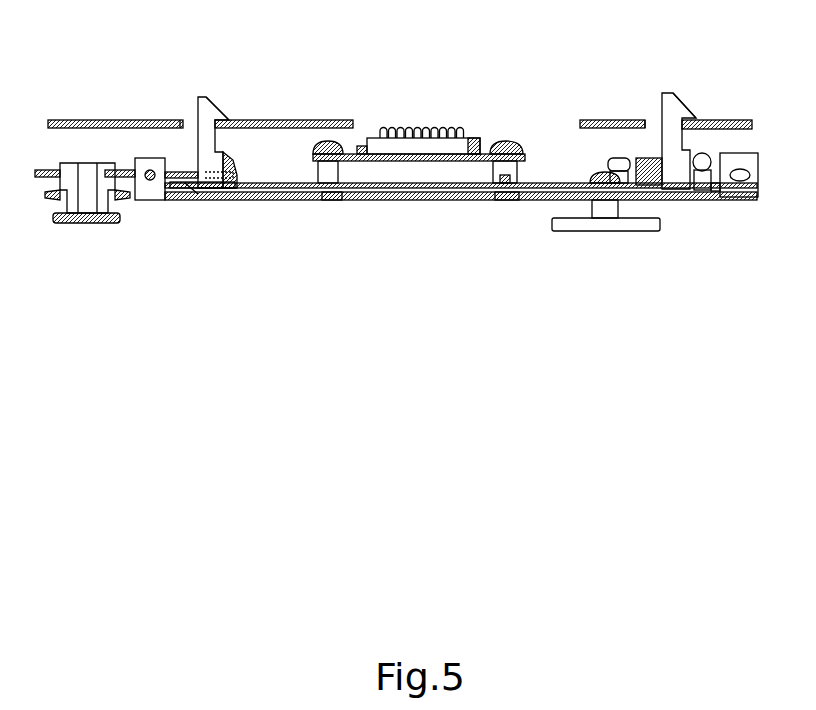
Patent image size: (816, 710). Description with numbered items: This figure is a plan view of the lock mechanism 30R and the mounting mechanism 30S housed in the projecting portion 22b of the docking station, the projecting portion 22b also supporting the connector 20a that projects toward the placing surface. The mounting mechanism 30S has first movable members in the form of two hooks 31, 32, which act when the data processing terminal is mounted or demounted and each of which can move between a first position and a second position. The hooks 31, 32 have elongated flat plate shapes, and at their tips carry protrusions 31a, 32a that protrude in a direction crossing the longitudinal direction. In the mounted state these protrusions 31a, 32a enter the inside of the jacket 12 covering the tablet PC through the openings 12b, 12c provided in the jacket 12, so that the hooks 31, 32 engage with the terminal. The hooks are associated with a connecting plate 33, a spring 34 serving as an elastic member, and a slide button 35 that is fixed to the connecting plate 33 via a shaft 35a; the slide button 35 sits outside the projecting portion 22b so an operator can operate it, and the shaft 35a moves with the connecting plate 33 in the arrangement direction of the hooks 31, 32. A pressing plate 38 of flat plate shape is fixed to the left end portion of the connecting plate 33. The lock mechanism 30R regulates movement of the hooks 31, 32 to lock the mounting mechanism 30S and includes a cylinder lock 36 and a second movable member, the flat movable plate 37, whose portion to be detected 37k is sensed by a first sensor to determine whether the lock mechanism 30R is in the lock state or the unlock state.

The jacket 12 is at (92, 120).
The opening 12b is at (185, 125).
The opening 12c is at (656, 118).
The connector 20a is at (470, 138).
The projecting portion 22b is at (283, 200).
The lock mechanism 30R is at (113, 237).
The mounting mechanism 30S is at (228, 85).
The hook 31 is at (200, 150).
The protrusion 31a is at (218, 110).
The hook 32 is at (664, 140).
The protrusion 32a is at (688, 115).
The connecting plate 33 is at (445, 200).
The spring 34 is at (650, 186).
The slide button 35 is at (628, 232).
The shaft 35a is at (594, 210).
The cylinder lock 36 is at (92, 223).
The movable plate 37 is at (48, 170).
The portion to be detected 37k is at (200, 192).
The pressing plate 38 is at (238, 190).